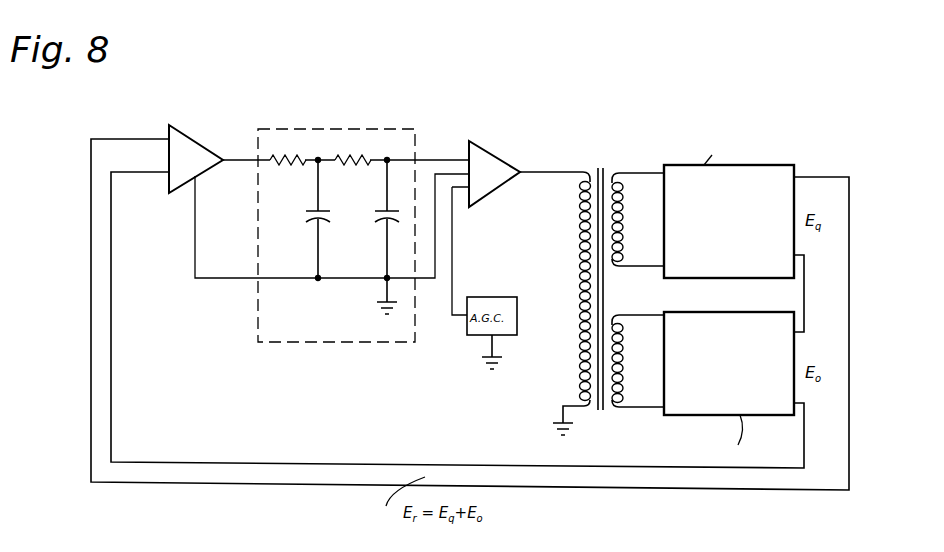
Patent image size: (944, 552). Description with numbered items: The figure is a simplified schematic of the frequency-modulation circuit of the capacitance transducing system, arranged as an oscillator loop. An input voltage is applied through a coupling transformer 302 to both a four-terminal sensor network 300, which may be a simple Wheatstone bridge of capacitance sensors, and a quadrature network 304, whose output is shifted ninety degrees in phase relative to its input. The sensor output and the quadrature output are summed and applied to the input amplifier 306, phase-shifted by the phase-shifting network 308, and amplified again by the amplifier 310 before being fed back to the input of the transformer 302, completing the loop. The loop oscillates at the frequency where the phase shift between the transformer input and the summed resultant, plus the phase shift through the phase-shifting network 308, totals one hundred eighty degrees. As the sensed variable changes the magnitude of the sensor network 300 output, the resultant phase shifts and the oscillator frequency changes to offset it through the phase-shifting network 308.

The sensor network 300 is at (740, 380).
The transformer 302 is at (603, 163).
The quadrature network 304 is at (740, 235).
The input amplifier 306 is at (212, 120).
The phase-shifting network 308 is at (417, 137).
The amplifier 310 is at (497, 159).